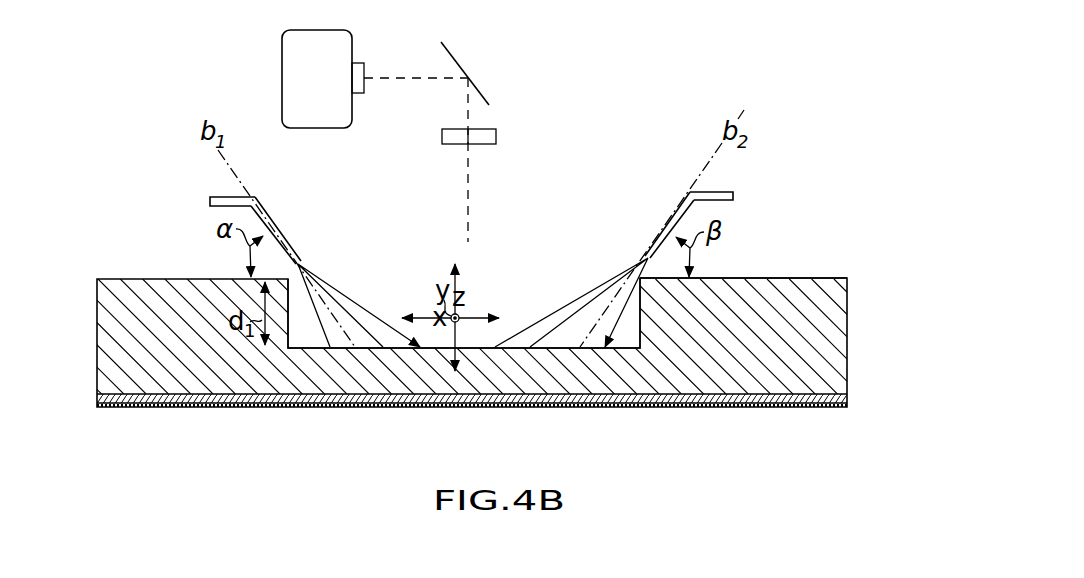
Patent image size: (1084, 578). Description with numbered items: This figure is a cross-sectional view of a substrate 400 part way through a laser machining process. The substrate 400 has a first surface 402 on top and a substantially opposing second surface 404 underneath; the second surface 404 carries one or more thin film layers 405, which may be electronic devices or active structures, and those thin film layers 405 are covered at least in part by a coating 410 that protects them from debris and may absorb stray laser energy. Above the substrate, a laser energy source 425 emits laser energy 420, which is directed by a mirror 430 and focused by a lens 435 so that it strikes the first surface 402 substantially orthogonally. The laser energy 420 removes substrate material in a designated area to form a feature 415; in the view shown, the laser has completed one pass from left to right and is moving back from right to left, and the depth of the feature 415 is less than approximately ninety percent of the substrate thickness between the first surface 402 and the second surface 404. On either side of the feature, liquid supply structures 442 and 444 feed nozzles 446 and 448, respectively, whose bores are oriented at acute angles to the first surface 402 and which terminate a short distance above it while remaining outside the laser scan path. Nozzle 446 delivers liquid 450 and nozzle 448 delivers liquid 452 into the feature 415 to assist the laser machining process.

The substrate 400 is at (160, 385).
The first surface 402 is at (710, 272).
The second surface 404 is at (747, 391).
The thin film layers 405 is at (848, 399).
The coating 410 is at (745, 408).
The feature 415 is at (543, 296).
The laser energy 420 is at (470, 190).
The laser energy source 425 is at (337, 92).
The mirror 430 is at (462, 61).
The lens 435 is at (497, 137).
The liquid supply structure 442 is at (735, 193).
The liquid supply structure 444 is at (210, 203).
The nozzle 446 is at (669, 224).
The nozzle 448 is at (268, 223).
The liquid 450 is at (571, 294).
The liquid 452 is at (359, 298).